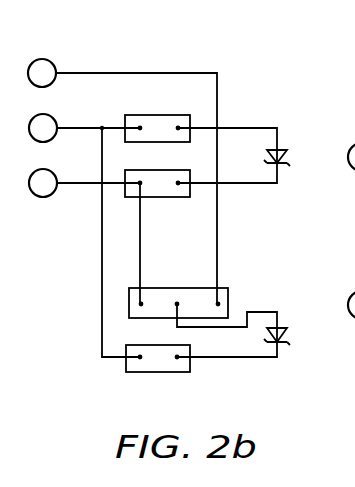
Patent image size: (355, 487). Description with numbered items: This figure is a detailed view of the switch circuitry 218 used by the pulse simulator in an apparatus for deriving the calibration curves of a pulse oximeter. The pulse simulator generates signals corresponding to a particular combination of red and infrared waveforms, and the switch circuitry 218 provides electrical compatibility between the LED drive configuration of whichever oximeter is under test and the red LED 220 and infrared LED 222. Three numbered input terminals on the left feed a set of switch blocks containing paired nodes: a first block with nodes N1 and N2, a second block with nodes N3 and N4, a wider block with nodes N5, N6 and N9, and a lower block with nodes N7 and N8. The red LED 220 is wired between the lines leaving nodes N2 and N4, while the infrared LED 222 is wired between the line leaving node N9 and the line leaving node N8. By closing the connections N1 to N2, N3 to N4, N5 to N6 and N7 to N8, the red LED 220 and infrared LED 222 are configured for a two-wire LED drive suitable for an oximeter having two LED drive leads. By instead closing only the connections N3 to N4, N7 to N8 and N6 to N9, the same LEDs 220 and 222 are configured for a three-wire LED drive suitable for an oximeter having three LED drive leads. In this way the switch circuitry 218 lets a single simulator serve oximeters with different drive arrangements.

The switch circuitry 218 is at (191, 212).
The red LED 220 is at (279, 150).
The infrared LED 222 is at (282, 335).
The connection node N1 is at (139, 109).
The connection node N2 is at (175, 109).
The connection node N3 is at (139, 164).
The connection node N4 is at (175, 164).
The connection node N5 is at (139, 323).
The connection node N6 is at (179, 283).
The connection node N7 is at (140, 378).
The connection node N8 is at (176, 378).
The connection node N9 is at (236, 291).